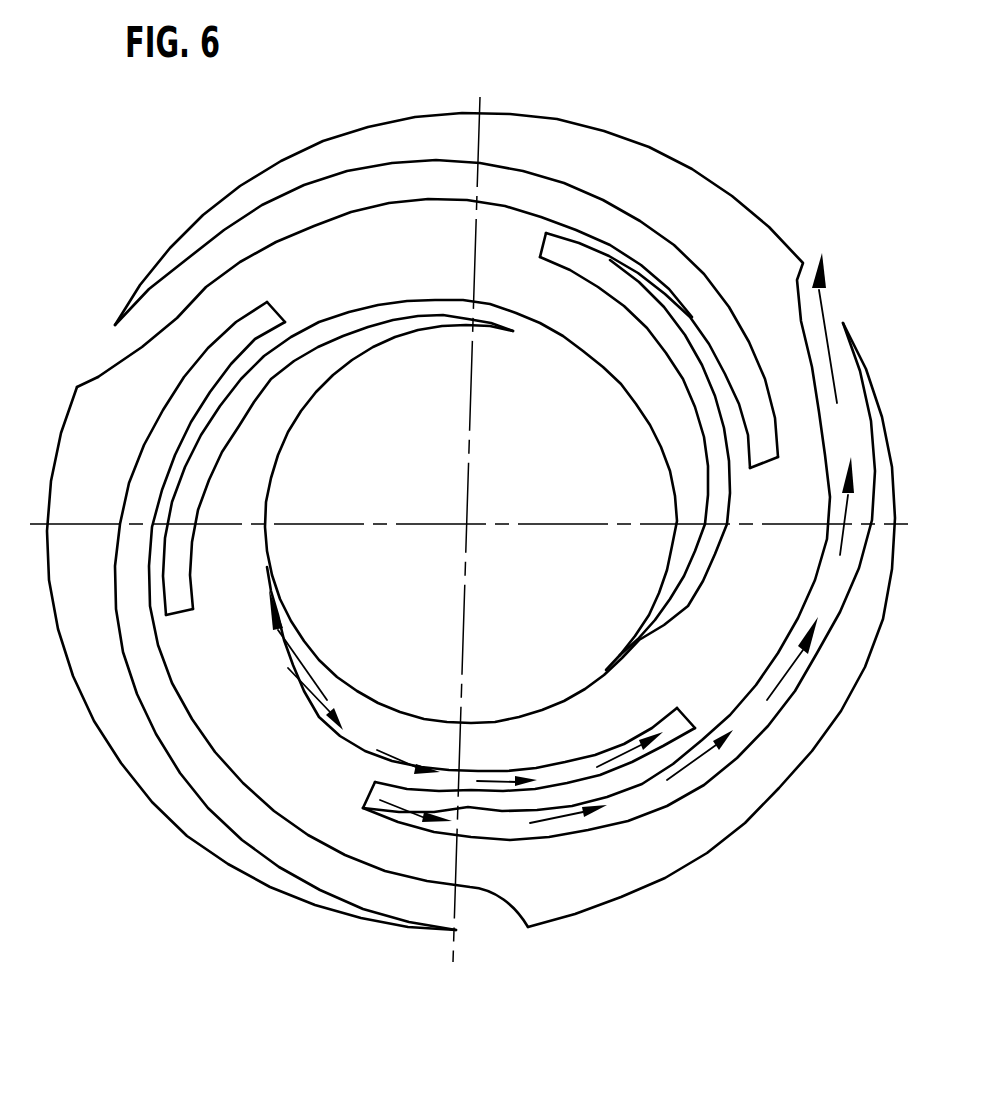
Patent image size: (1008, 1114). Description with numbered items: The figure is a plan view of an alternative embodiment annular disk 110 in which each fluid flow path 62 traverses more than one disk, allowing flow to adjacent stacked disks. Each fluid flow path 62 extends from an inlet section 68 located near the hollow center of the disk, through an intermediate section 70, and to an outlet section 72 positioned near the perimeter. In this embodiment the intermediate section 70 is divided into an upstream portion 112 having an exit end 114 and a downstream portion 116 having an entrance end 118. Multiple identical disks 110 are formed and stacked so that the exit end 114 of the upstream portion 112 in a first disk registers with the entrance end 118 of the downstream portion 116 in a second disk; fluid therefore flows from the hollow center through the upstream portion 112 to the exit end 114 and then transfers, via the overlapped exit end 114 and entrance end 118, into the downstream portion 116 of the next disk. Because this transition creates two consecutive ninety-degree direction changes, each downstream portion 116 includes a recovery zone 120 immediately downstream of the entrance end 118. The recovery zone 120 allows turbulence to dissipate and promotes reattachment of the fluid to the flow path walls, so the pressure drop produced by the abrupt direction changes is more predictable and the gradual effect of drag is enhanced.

The fluid flow path 62 is at (698, 572).
The inlet section 68 is at (617, 666).
The intermediate section 70 is at (517, 203).
The outlet section 72 is at (97, 346).
The annular disk 110 is at (305, 150).
The upstream portion 112 is at (608, 296).
The exit end 114 is at (550, 243).
The downstream portion 116 is at (637, 218).
The entrance end 118 is at (767, 457).
The recovery zone 120 is at (720, 342).